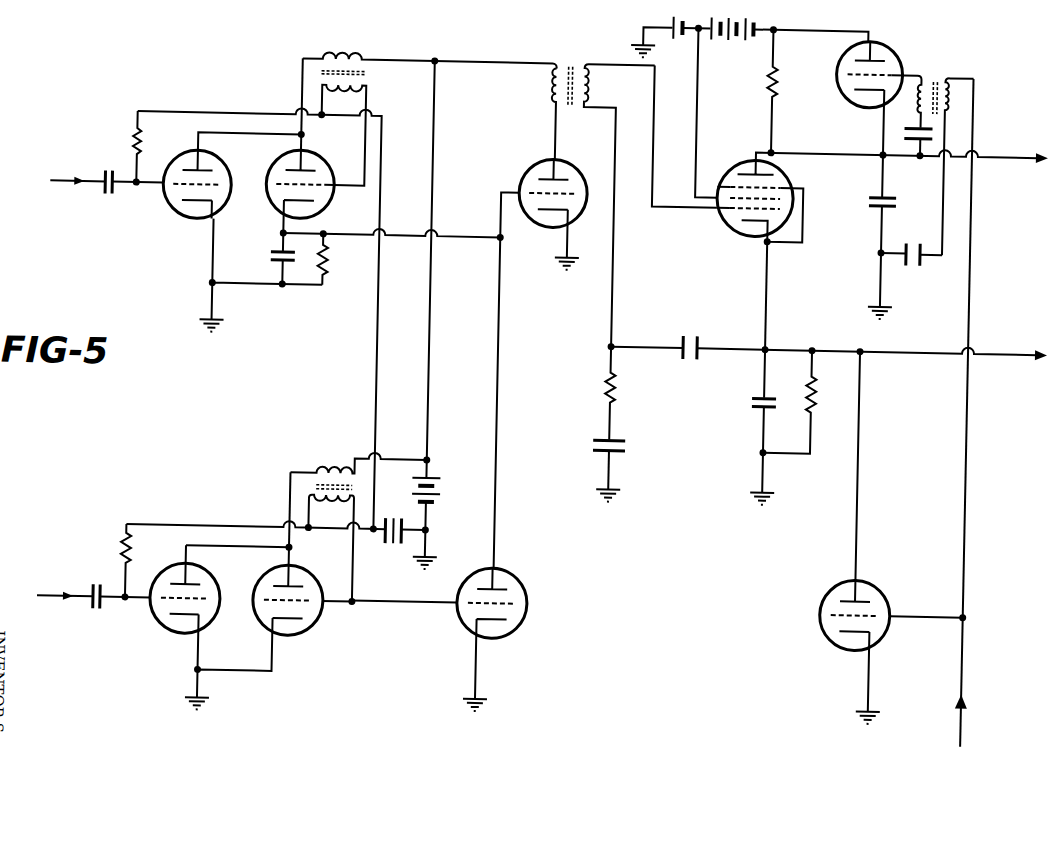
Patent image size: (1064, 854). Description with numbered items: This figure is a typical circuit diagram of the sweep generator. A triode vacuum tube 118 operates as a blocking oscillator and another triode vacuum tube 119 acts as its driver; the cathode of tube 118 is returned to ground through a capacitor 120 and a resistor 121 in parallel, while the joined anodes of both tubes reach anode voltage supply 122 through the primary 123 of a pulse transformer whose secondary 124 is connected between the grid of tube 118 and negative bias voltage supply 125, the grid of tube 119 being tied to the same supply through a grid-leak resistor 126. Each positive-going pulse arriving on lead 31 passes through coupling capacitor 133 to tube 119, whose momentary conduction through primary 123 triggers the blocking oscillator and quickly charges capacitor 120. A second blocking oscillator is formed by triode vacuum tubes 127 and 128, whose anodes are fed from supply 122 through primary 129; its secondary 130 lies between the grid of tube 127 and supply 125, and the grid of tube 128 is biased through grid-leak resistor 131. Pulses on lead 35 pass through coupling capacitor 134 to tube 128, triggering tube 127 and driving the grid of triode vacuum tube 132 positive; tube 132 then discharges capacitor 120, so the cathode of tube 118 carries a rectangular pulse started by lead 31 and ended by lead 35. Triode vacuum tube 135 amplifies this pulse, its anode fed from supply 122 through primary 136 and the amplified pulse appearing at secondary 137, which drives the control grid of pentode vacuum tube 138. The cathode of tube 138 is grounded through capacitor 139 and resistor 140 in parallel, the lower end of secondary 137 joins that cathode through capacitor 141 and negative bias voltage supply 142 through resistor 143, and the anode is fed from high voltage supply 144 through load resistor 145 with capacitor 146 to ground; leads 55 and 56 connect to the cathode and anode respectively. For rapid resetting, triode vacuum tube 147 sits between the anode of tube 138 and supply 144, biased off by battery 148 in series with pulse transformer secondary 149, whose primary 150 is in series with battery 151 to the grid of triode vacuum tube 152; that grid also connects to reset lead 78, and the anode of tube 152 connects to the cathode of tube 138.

The lead 31 is at (64, 189).
The coupling capacitor 133 is at (108, 204).
The grid-leak resistor 126 is at (133, 146).
The triode vacuum tube 119 is at (172, 212).
The triode vacuum tube 118 is at (272, 168).
The primary 123 is at (358, 57).
The secondary 124 is at (353, 93).
The capacitor 120 is at (270, 260).
The resistor 121 is at (328, 260).
The anode voltage supply 122 is at (438, 481).
The negative bias voltage supply 125 is at (392, 549).
The triode vacuum tube 135 is at (532, 166).
The primary 136 is at (549, 90).
The secondary 137 is at (587, 89).
The primary 129 is at (338, 466).
The secondary 130 is at (316, 509).
The grid-leak resistor 131 is at (126, 556).
The coupling capacitor 134 is at (99, 620).
The triode vacuum tube 128 is at (166, 640).
The triode vacuum tube 127 is at (264, 634).
The triode vacuum tube 132 is at (514, 580).
The lead 35 is at (55, 600).
The pentode vacuum tube 138 is at (790, 176).
The capacitor 141 is at (690, 330).
The resistor 143 is at (619, 392).
The negative bias voltage supply 142 is at (627, 446).
The capacitor 139 is at (753, 397).
The resistor 140 is at (808, 380).
The lead 55 is at (1010, 346).
The high voltage supply 144 is at (666, 7).
The load resistor 145 is at (764, 82).
The triode vacuum tube 147 is at (838, 58).
The pulse transformer secondary 149 is at (913, 103).
The primary 150 is at (962, 60).
The battery 148 is at (898, 146).
The capacitor 146 is at (868, 202).
The battery 151 is at (924, 222).
The lead 56 is at (1012, 147).
The triode vacuum tube 152 is at (826, 582).
The reset lead 78 is at (968, 675).